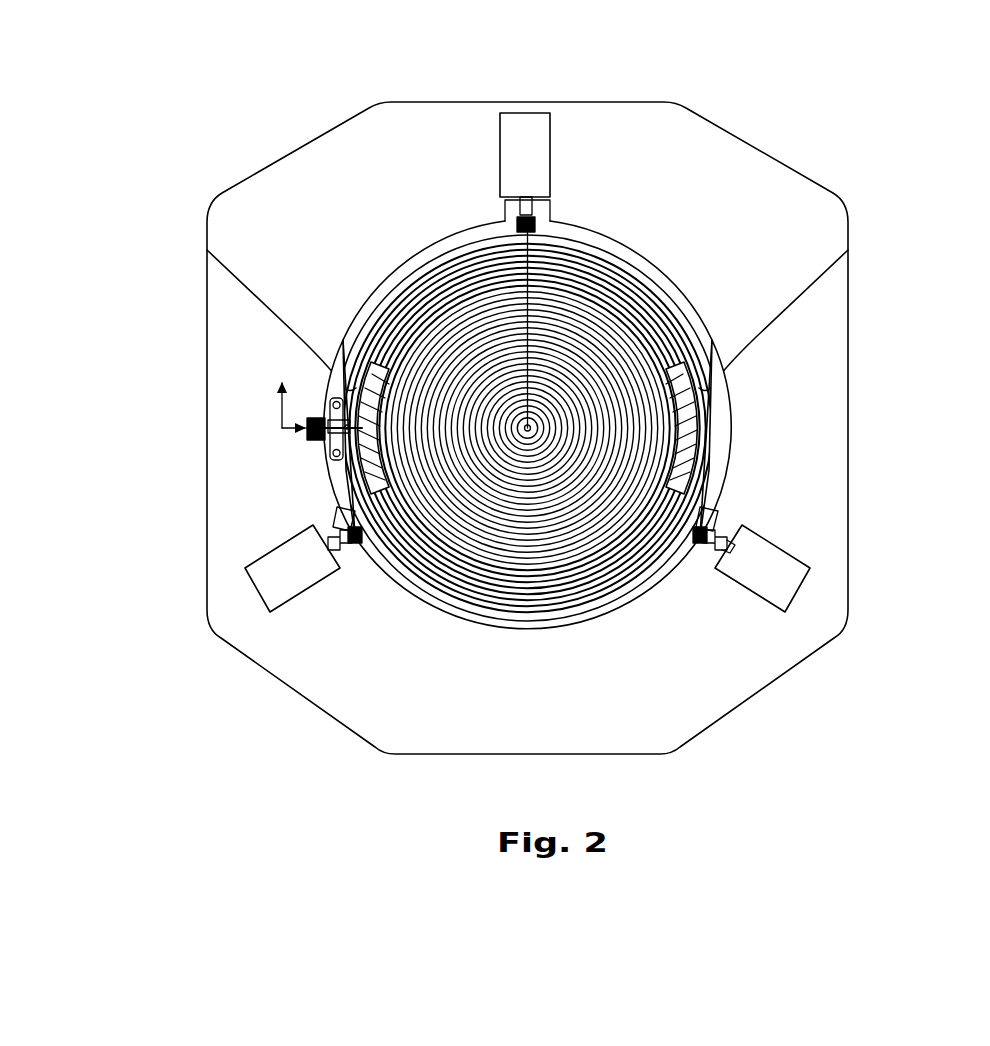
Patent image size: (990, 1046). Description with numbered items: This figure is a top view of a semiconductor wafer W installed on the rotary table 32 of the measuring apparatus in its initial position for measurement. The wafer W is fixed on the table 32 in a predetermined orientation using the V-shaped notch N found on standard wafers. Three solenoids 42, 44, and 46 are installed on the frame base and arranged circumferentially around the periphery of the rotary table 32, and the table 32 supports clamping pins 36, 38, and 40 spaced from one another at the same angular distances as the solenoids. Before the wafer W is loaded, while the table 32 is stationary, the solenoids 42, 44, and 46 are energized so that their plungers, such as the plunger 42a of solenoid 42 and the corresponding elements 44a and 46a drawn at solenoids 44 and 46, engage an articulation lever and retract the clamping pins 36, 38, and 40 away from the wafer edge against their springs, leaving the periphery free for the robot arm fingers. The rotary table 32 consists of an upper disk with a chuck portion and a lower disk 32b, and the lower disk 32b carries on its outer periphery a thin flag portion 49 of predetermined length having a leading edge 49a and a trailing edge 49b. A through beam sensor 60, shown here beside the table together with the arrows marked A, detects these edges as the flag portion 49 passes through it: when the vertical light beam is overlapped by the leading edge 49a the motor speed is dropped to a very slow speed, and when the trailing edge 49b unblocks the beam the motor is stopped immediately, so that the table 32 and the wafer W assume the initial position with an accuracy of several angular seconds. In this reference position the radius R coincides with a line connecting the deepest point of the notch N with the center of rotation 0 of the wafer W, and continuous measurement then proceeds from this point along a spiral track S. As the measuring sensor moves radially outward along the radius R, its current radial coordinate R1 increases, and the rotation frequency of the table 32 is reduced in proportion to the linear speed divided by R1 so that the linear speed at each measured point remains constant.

The current radial coordinate R1 is at (518, 388).
The V-shaped notch N is at (517, 228).
The plunger 42a is at (518, 207).
The solenoid 42 is at (553, 150).
The clamping pin 36 is at (543, 207).
The radius R is at (534, 280).
The semiconductor wafer W is at (637, 260).
The spiral track S is at (660, 287).
The leading edge of flag portion 49a is at (381, 394).
The rotary table 32 is at (745, 381).
The direction arrow A is at (288, 387).
The through beam sensor 60 is at (306, 428).
The flag portion 49 is at (712, 430).
The lower disk 32b is at (347, 470).
The center of rotation 0 is at (530, 430).
The trailing edge of flag portion 49b is at (710, 490).
The pin of actuator 46a is at (333, 535).
The clamping pin 38 is at (730, 522).
The solenoid 46 is at (305, 600).
The solenoid 44 is at (805, 590).
The pin of actuator 44a is at (703, 537).
The clamping pin 40 is at (353, 562).